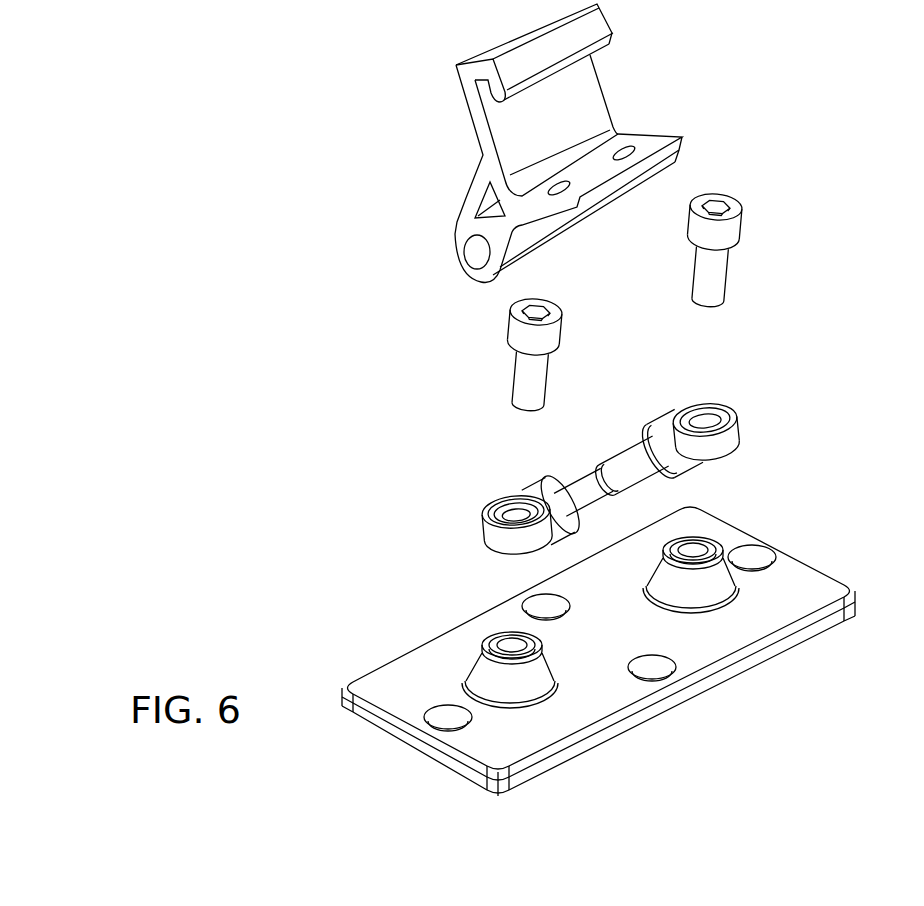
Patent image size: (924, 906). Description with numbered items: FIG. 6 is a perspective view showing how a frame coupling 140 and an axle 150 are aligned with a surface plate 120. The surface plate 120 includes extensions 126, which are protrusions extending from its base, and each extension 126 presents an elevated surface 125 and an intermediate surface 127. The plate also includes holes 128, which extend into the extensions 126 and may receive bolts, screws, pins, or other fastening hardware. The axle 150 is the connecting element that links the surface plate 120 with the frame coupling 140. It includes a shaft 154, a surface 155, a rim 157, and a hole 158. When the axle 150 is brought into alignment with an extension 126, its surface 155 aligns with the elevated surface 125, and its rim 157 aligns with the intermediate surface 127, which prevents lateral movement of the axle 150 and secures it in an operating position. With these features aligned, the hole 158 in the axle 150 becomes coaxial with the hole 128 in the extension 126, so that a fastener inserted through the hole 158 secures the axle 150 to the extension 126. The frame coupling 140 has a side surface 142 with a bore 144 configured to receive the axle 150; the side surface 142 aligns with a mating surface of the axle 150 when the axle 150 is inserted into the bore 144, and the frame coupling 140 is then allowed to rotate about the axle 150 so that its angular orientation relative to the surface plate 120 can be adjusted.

The surface plate 120 is at (862, 470).
The elevated surface 125 is at (712, 548).
The extensions 126 is at (553, 633).
The intermediate surface 127 is at (708, 573).
The holes 128 is at (512, 645).
The frame coupling 140 is at (386, 22).
The side surface 142 is at (492, 162).
The bore 144 is at (476, 254).
The axle 150 is at (476, 428).
The shaft 154 is at (582, 487).
The surface 155 is at (692, 412).
The rim 157 is at (722, 408).
The hole 158 is at (514, 518).